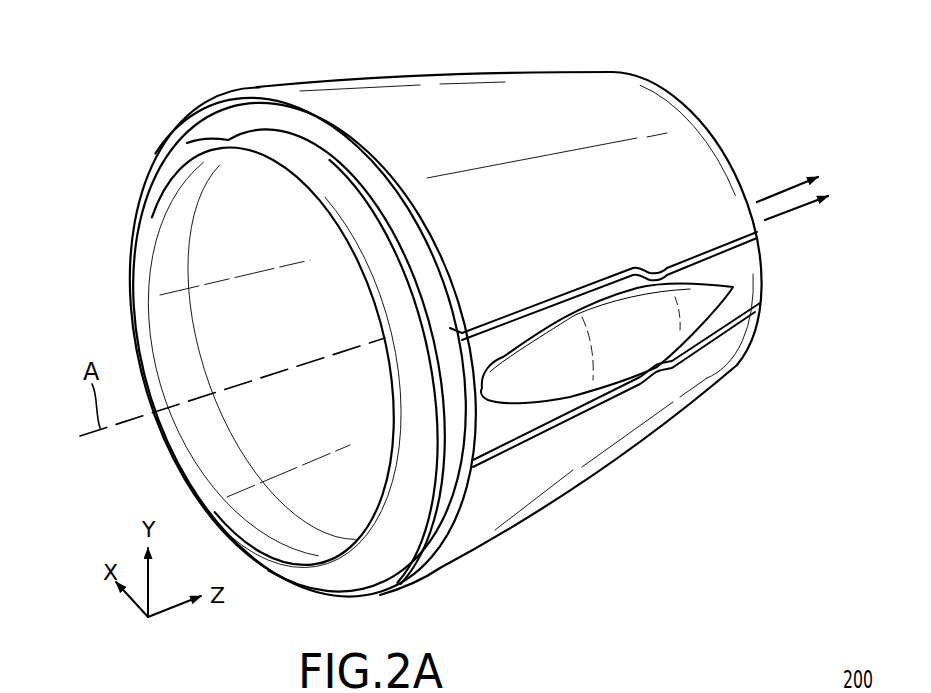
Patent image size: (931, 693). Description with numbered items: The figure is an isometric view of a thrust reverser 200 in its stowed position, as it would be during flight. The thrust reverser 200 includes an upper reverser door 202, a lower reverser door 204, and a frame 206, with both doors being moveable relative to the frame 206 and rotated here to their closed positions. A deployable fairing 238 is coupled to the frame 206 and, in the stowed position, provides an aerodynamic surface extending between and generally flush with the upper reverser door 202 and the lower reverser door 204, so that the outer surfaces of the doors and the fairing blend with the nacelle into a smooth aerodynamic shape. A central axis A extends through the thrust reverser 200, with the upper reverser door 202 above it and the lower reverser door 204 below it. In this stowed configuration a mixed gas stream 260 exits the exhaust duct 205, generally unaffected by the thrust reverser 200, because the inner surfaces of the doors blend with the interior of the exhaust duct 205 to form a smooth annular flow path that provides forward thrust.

The thrust reverser 200 is at (118, 74).
The upper reverser door 202 is at (362, 88).
The lower reverser door 204 is at (578, 477).
The exhaust duct 205 is at (337, 328).
The frame 206 is at (470, 460).
The deployable fairing 238 is at (745, 263).
The mixed gas stream 260 is at (774, 195).